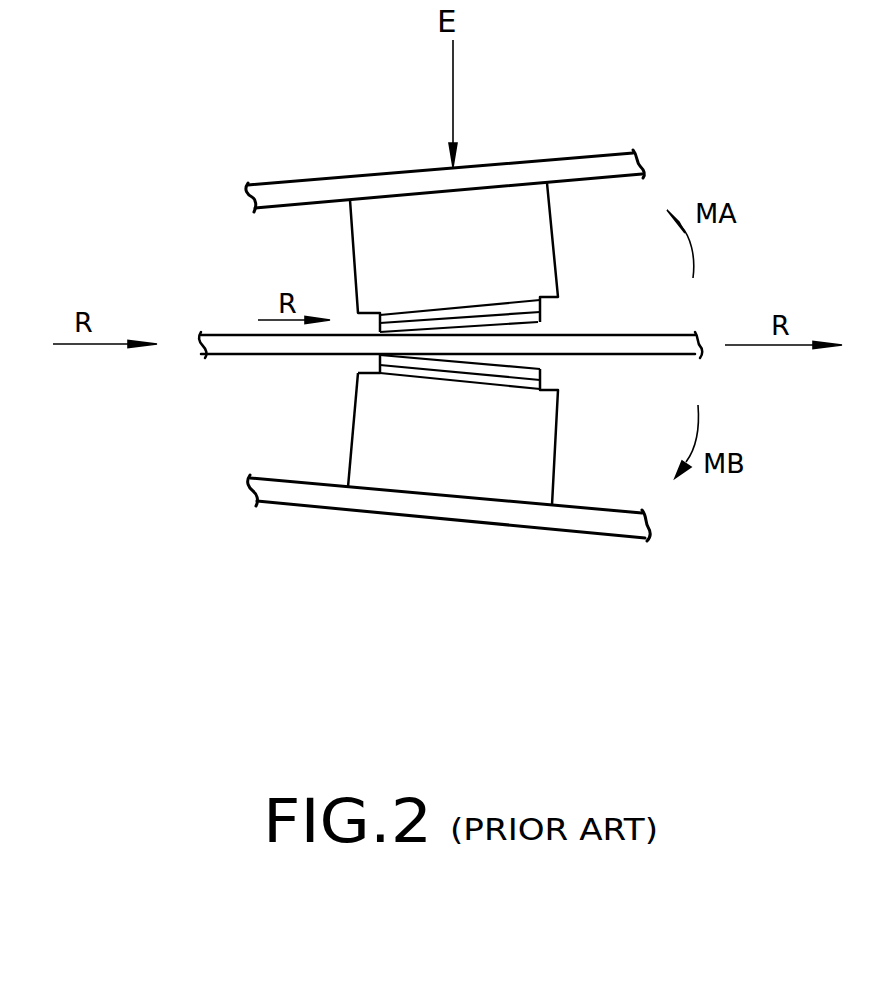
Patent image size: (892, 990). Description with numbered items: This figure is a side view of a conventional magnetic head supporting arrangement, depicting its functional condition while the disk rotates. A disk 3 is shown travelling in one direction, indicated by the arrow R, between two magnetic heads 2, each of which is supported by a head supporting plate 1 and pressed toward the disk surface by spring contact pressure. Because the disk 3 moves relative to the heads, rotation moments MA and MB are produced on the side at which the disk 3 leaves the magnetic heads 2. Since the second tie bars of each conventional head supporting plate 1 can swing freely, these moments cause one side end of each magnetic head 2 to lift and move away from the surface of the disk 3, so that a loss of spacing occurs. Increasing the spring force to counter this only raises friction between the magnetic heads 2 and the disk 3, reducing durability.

The head supporting plate 1 is at (575, 167).
The magnetic head 2 is at (398, 324).
The disk 3 is at (233, 338).